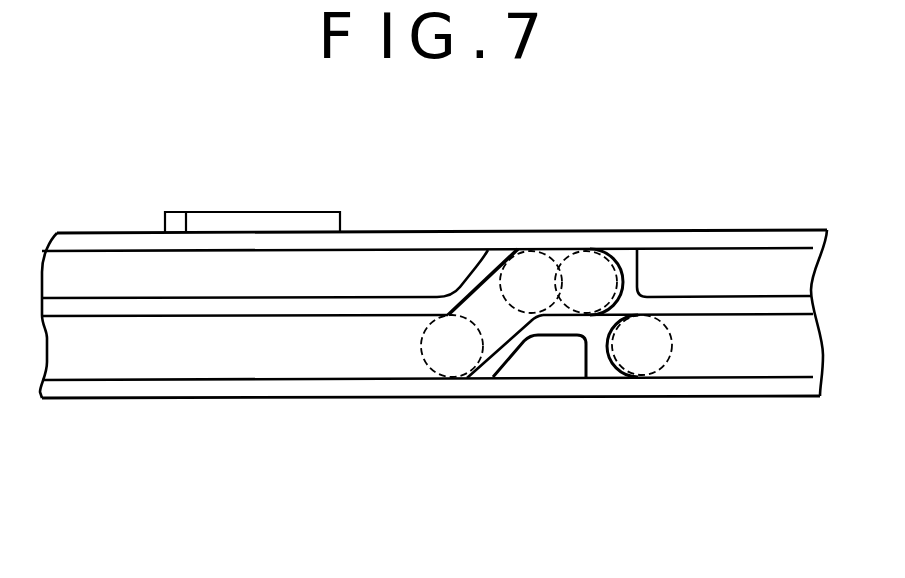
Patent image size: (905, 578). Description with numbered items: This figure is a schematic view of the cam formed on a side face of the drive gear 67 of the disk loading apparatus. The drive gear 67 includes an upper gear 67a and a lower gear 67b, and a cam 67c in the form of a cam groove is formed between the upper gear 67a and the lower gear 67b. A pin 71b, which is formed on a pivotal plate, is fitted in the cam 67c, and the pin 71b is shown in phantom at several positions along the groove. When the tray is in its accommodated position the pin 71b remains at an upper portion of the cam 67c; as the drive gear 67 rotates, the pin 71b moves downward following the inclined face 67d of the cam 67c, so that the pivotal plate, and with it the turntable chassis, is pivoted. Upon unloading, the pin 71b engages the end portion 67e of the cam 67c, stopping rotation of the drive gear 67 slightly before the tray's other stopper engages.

The drive gear 67 is at (213, 412).
The upper gear 67a is at (377, 243).
The lower gear 67b is at (307, 388).
The cam 67c is at (134, 348).
The inclined face 67d is at (517, 341).
The end portion 67e is at (605, 348).
The pin 71b is at (530, 272).